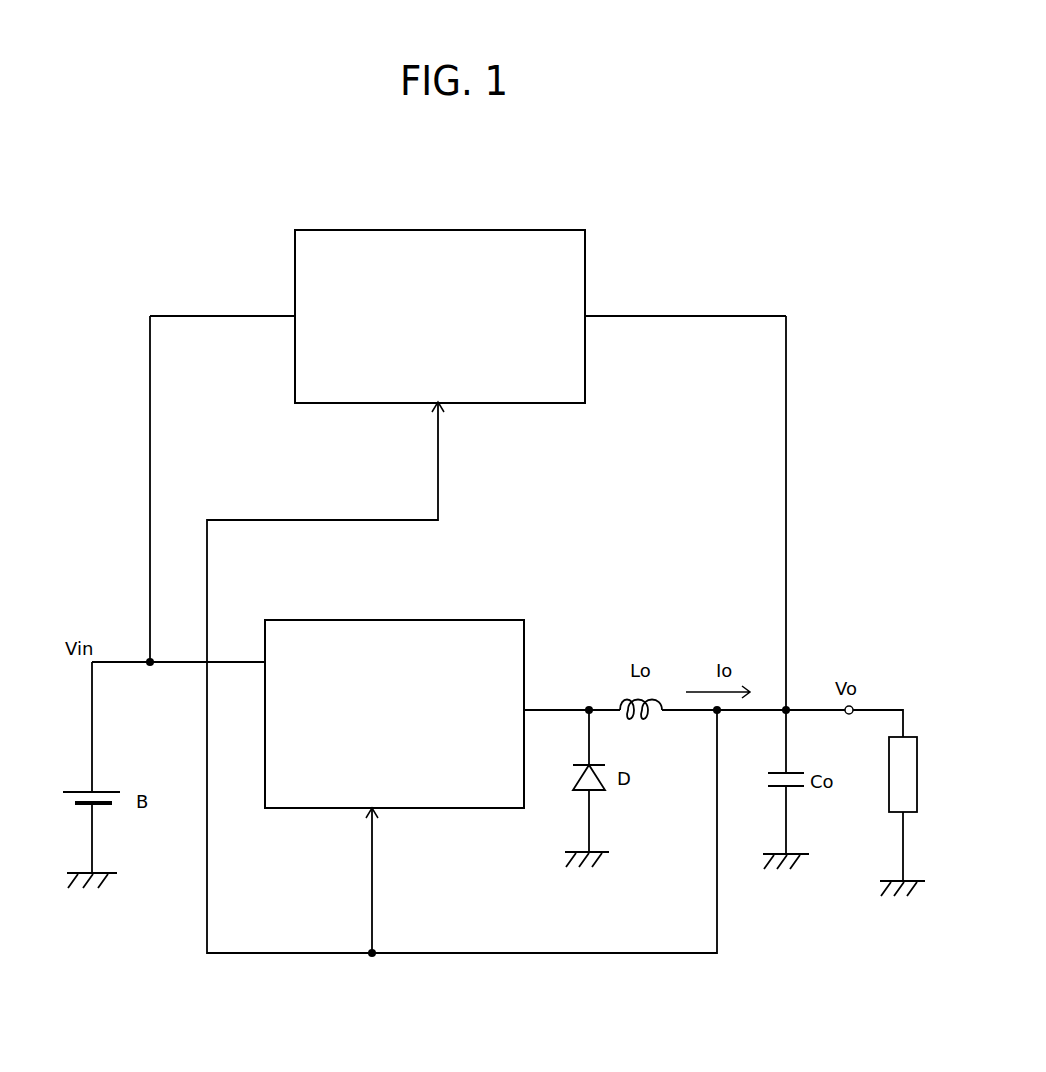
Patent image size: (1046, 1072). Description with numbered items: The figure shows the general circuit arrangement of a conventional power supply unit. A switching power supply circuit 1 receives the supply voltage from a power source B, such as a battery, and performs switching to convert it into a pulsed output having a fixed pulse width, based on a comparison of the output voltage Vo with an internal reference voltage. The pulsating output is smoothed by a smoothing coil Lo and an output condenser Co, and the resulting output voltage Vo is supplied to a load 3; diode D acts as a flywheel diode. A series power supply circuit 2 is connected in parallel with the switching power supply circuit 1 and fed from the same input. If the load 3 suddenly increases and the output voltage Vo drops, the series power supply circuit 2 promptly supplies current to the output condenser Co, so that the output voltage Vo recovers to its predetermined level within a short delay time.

The switching power supply circuit 1 is at (492, 620).
The series power supply circuit 2 is at (545, 230).
The load 3 is at (884, 802).